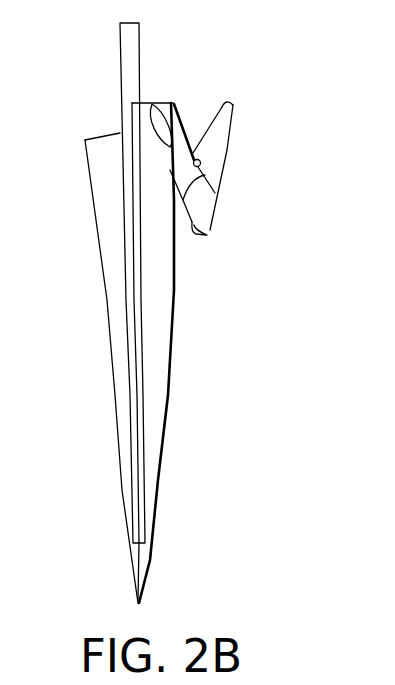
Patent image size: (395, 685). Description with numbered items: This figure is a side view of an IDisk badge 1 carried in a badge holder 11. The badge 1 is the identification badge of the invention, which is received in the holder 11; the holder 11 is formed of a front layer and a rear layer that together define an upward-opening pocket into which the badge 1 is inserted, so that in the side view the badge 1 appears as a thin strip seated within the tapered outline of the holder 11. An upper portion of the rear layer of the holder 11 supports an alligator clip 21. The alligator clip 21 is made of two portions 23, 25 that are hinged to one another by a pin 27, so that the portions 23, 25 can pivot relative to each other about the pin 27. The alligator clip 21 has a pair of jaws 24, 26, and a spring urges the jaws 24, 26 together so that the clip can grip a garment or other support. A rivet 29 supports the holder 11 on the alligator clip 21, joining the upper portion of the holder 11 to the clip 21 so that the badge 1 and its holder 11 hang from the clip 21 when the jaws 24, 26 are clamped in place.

The IDisk badge 1 is at (139, 23).
The badge holder 11 is at (162, 556).
The alligator clip 21 is at (231, 184).
The portion 23 is at (182, 112).
The jaw 24 is at (185, 207).
The portion 25 is at (210, 188).
The jaw 26 is at (210, 234).
The pin 27 is at (201, 161).
The rivet 29 is at (150, 104).